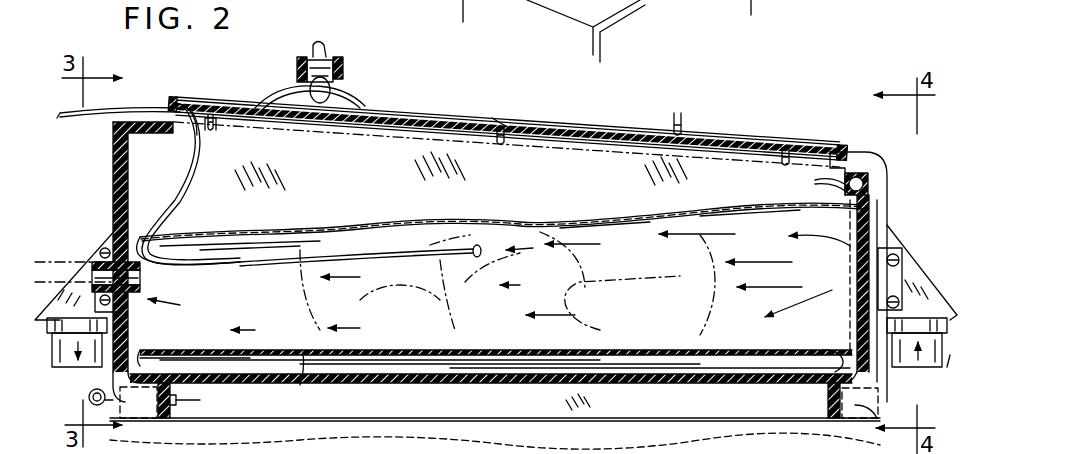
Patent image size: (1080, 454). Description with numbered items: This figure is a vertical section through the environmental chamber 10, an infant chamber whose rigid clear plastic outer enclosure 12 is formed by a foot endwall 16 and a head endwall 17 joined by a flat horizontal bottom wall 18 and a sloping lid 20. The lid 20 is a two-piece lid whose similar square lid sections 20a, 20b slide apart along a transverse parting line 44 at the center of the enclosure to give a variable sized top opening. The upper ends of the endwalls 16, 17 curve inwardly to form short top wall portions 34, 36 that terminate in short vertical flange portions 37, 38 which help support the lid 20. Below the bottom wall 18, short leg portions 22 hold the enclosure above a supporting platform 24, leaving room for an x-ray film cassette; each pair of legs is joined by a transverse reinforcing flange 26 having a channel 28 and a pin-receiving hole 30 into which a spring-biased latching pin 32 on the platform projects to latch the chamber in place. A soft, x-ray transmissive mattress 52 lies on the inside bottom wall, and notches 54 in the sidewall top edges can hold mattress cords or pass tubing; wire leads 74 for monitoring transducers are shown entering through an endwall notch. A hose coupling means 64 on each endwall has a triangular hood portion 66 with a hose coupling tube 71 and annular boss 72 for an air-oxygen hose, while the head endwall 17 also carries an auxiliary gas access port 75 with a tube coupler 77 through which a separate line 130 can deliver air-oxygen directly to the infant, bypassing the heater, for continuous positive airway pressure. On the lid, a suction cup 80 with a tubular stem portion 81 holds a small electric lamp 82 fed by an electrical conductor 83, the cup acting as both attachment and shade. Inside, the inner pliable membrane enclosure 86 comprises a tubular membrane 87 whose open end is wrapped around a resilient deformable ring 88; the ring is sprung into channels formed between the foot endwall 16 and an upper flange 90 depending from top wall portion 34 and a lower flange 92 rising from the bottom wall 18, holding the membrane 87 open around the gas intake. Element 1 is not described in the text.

The component 1 is at (300, 385).
The environmental chamber 10 is at (603, 147).
The outer enclosure 12 is at (709, 126).
The foot endwall 16 is at (882, 200).
The head endwall 17 is at (118, 152).
The bottom wall 18 is at (375, 402).
The lid 20 is at (468, 109).
The lid section 20a is at (402, 114).
The lid section 20b is at (538, 124).
The leg portions 22 is at (105, 402).
The supporting platform 24 is at (470, 418).
The transverse reinforcing flange 26 is at (163, 385).
The channel 28 is at (160, 415).
The pin-receiving hole 30 is at (180, 400).
The spring-biased latching pin 32 is at (85, 392).
The top wall portion 34 is at (866, 150).
The top wall portion 36 is at (143, 122).
The vertical flange portion 37 is at (840, 148).
The vertical flange portion 38 is at (172, 106).
The transverse parting line 44 is at (504, 122).
The mattress 52 is at (208, 357).
The notches 54 is at (210, 132).
The hose coupling means 64 is at (63, 287).
The hood portion 66 is at (922, 295).
The hose coupling tube 71 is at (948, 365).
The annular boss 72 is at (950, 332).
The wire leads 74 is at (348, 235).
The gas access port 75 is at (118, 248).
The tube coupler 77 is at (95, 265).
The suction cup 80 is at (279, 92).
The tubular stem portion 81 is at (300, 58).
The electric lamp 82 is at (341, 78).
The electrical conductor 83 is at (317, 45).
The inner pliable membrane enclosure 86 is at (333, 225).
The tubular membrane 87 is at (262, 240).
The resilient deformable ring 88 is at (883, 163).
The upper flange 90 is at (815, 180).
The lower flange 92 is at (815, 355).
The separate line 130 is at (448, 262).